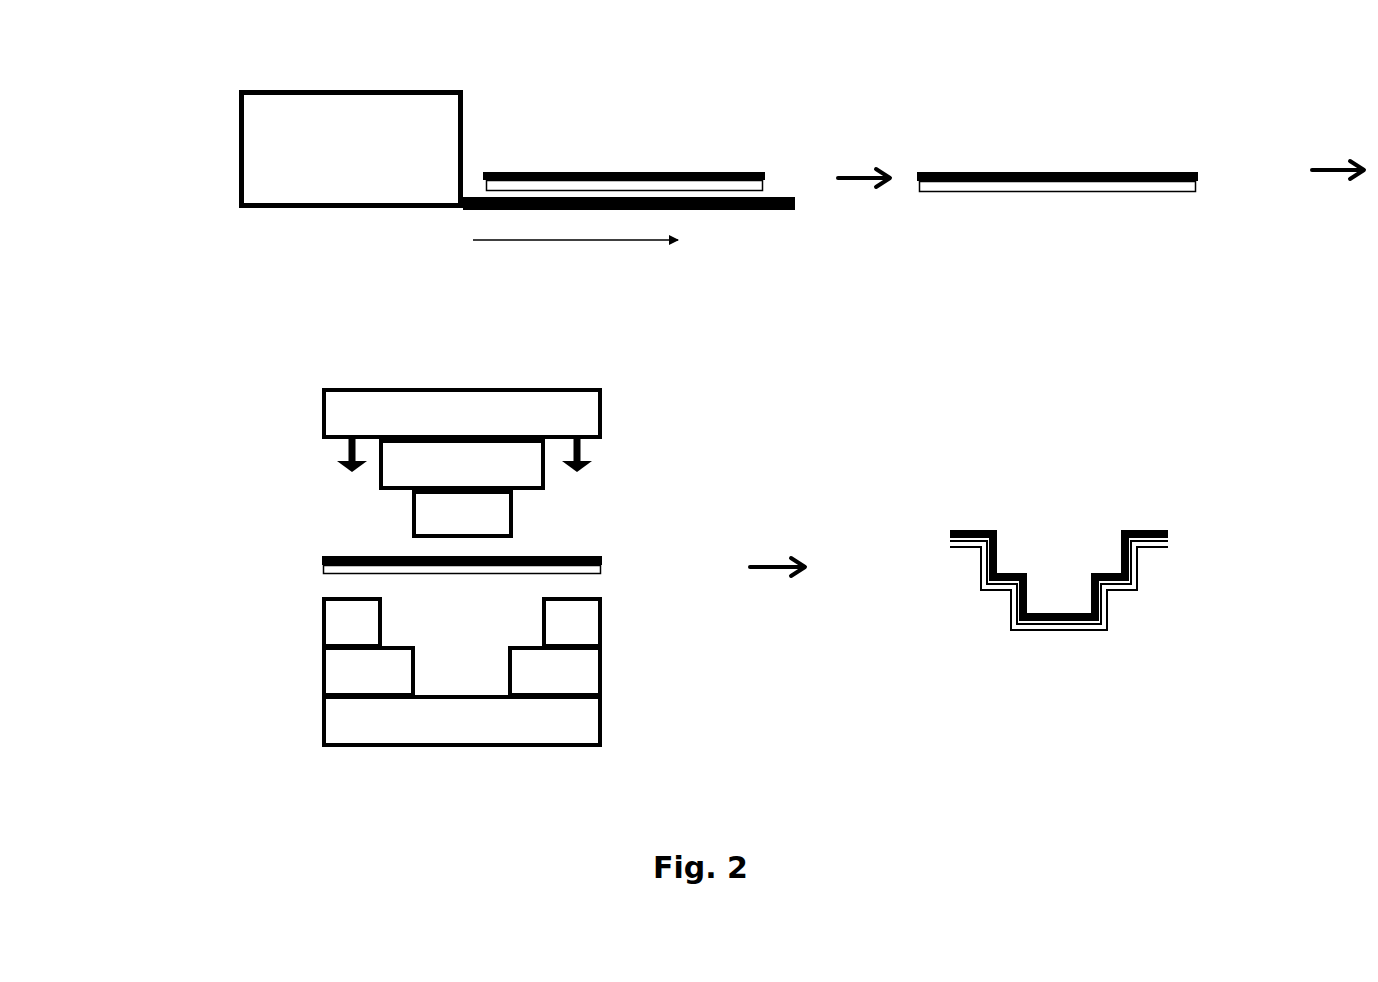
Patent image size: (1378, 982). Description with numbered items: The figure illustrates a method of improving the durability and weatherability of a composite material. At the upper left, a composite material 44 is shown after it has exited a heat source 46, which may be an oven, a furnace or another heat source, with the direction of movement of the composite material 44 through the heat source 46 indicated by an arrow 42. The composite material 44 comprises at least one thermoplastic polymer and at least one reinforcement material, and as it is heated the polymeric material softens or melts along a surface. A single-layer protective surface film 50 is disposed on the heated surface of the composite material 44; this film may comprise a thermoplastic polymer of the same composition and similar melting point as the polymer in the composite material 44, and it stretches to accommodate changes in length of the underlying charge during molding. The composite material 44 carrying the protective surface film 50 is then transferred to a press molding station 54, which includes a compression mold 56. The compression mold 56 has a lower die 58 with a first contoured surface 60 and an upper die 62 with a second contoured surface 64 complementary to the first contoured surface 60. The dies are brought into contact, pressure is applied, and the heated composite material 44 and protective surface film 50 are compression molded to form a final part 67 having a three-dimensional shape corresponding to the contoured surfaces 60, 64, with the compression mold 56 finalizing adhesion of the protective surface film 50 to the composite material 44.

The arrow 42 is at (572, 240).
The composite material 44 is at (765, 183).
The heat source 46 is at (350, 89).
The protective surface film 50 is at (622, 172).
The press molding station 54 is at (672, 387).
The compression mold 56 is at (322, 417).
The lower die 58 is at (462, 748).
The first contoured surface 60 is at (524, 648).
The upper die 62 is at (462, 389).
The second contoured surface 64 is at (410, 513).
The final part 67 is at (1206, 564).